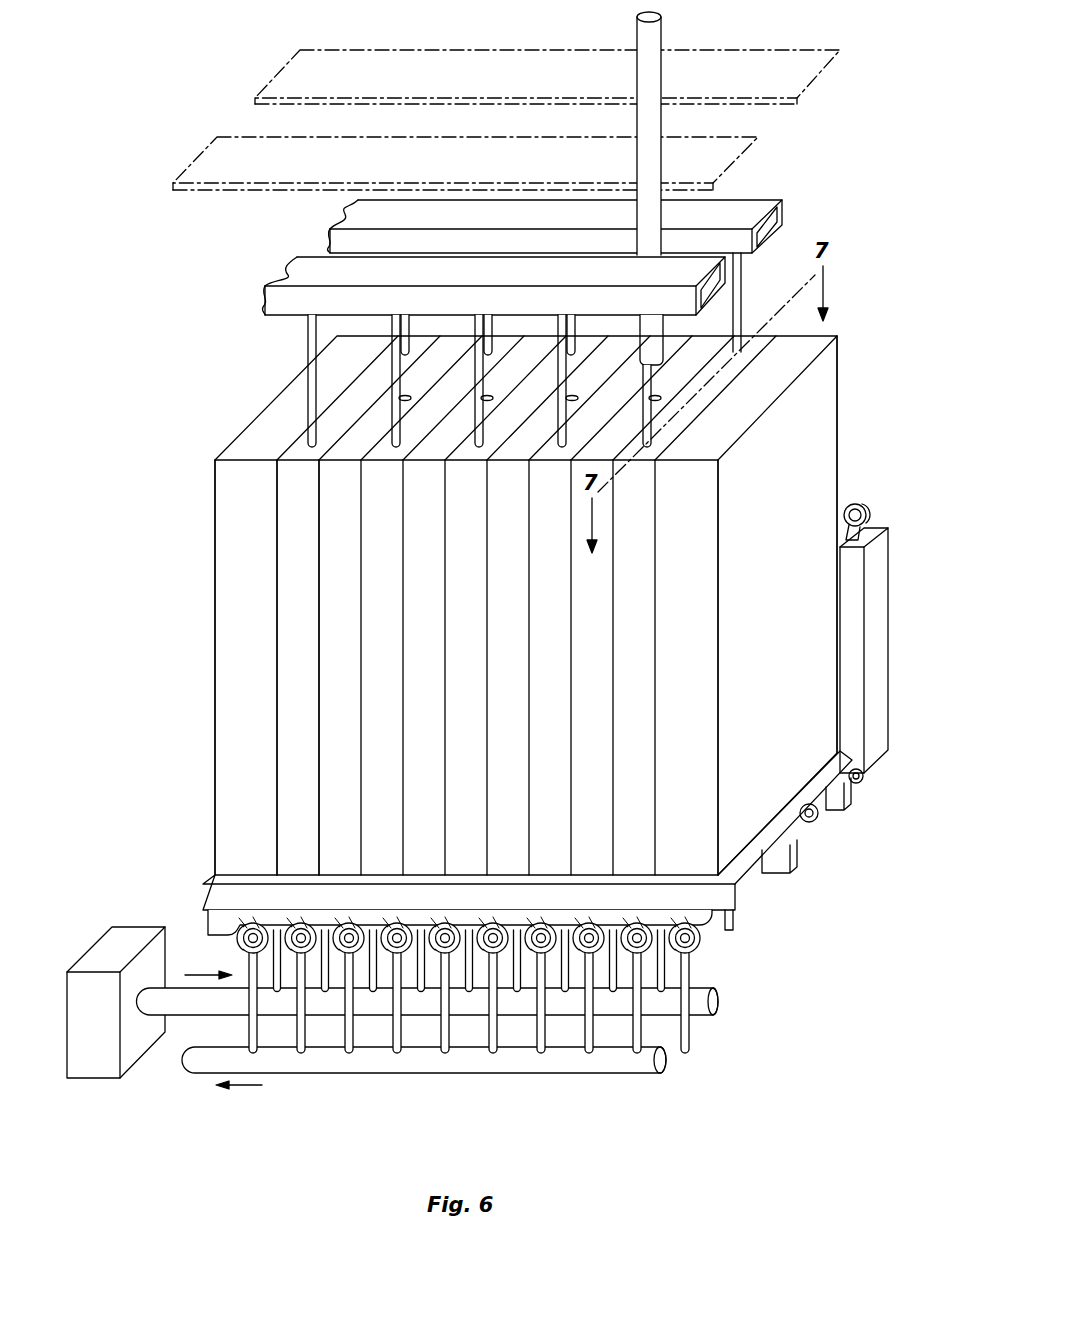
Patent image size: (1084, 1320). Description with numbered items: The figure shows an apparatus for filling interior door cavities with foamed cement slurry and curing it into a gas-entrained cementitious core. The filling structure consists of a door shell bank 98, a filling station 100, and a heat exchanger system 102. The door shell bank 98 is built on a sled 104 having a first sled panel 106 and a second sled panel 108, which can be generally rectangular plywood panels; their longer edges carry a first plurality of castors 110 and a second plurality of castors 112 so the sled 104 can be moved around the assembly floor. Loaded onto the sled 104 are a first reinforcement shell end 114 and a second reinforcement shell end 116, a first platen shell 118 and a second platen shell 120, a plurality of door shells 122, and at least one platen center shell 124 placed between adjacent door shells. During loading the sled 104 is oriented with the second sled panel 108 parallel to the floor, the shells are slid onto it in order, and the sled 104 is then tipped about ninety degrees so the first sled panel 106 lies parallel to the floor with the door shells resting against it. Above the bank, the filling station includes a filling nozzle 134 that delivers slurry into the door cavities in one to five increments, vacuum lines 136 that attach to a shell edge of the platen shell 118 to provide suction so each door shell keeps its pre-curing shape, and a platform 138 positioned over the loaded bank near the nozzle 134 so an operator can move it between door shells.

The door shell bank 98 is at (511, 605).
The filling station 100 is at (461, 229).
The heat exchanger system 102 is at (211, 1112).
The sled 104 is at (554, 855).
The first sled panel 106 is at (752, 864).
The second sled panel 108 is at (893, 655).
The first plurality of castors 110 is at (642, 953).
The second plurality of castors 112 is at (860, 508).
The first reinforcement shell end 114 is at (213, 517).
The second reinforcement shell end 116 is at (822, 402).
The first platen shell 118 is at (314, 690).
The second platen shell 120 is at (650, 690).
The door shells 122 is at (356, 690).
The platen center shell 124 is at (398, 690).
The filling nozzle 134 is at (661, 148).
The vacuum lines 136 is at (400, 343).
The platform 138 is at (299, 270).